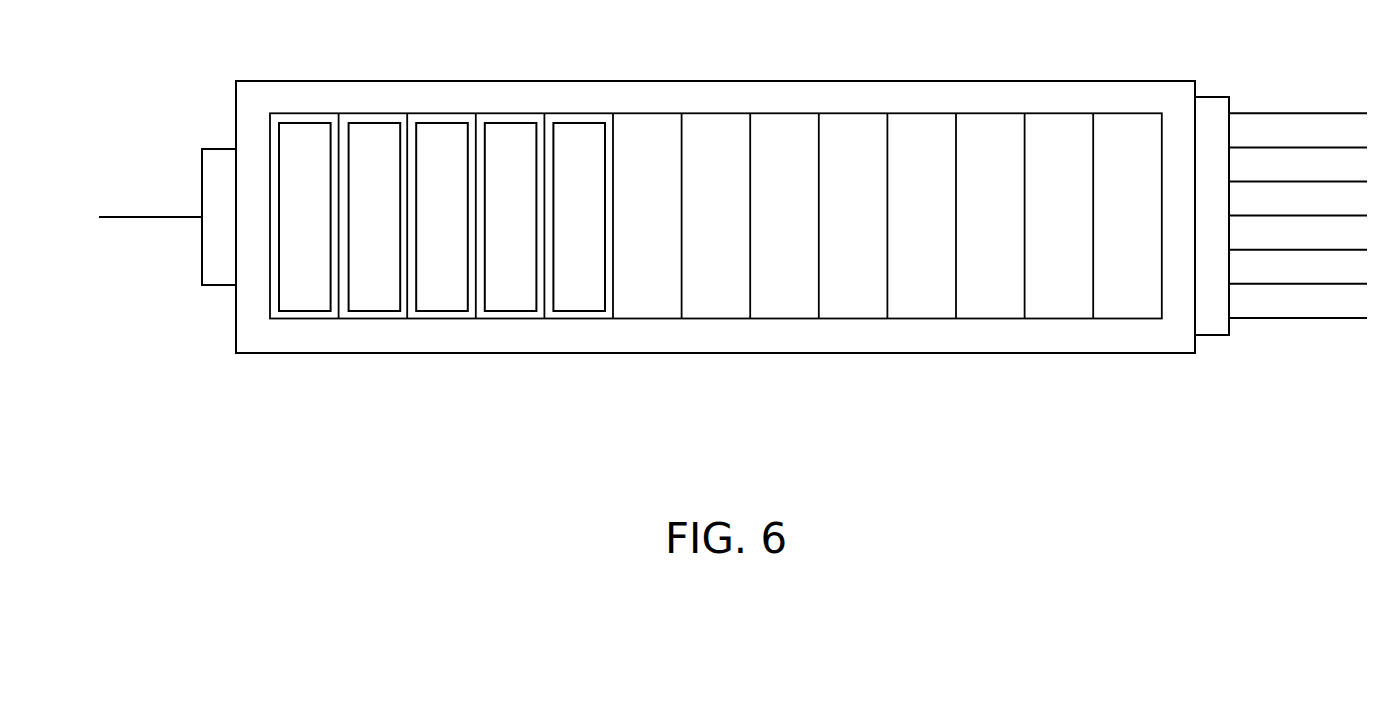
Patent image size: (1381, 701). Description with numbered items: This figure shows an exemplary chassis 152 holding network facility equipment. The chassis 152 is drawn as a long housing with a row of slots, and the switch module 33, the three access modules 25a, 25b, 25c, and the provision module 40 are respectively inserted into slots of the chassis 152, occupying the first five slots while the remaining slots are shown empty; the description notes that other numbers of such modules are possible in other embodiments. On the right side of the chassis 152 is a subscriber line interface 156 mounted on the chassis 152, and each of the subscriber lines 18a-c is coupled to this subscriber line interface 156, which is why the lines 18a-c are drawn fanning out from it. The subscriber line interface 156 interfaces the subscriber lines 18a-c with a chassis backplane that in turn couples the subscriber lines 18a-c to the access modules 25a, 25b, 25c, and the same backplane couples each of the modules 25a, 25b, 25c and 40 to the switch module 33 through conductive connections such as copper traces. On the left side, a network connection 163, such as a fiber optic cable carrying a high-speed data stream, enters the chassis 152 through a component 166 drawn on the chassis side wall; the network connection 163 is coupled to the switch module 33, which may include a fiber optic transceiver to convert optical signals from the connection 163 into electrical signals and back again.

The chassis 152 is at (817, 80).
The connector 166 is at (222, 149).
The network connection 163 is at (133, 216).
The access module 25a is at (287, 122).
The access module 25b is at (356, 122).
The access module 25c is at (423, 122).
The provision module 40 is at (492, 122).
The switch module 33 is at (560, 122).
The subscriber line interface 156 is at (1210, 97).
The subscriber lines 18a-c is at (1243, 100).